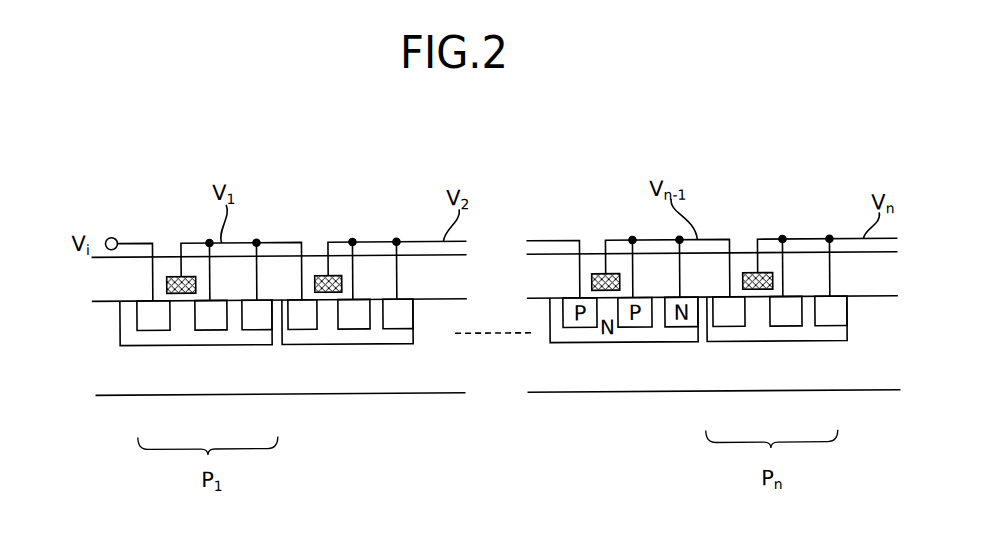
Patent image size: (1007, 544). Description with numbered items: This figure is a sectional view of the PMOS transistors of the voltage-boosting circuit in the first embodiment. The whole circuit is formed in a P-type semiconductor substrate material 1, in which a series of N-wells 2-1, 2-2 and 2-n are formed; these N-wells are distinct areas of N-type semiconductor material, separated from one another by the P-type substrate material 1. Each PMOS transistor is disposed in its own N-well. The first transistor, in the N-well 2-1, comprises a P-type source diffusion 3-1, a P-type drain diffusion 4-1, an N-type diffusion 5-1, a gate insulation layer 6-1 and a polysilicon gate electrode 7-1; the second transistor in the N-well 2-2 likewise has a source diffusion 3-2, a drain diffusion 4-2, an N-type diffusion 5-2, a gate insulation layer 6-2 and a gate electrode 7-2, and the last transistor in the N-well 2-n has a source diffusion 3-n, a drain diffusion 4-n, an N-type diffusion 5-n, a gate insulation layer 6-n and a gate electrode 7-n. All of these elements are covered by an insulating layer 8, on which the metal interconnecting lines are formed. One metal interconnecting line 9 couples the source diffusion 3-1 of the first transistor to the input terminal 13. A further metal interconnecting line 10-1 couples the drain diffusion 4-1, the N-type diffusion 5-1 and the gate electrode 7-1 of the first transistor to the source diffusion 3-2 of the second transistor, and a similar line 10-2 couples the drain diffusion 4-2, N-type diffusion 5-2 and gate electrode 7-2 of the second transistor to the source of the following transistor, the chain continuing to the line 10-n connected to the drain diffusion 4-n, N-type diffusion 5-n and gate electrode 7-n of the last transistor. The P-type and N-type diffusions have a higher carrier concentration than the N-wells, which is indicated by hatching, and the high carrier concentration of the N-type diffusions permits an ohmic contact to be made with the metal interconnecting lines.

The P-type semiconductor substrate material 1 is at (418, 352).
The N-well 2-1 is at (250, 344).
The N-well 2-2 is at (395, 344).
The N-well 2-n is at (833, 344).
The P-type source diffusion 3-1 is at (152, 330).
The P-type source diffusion 3-2 is at (310, 344).
The P-type source diffusion 3-n is at (735, 344).
The P-type drain diffusion 4-1 is at (210, 344).
The P-type drain diffusion 4-2 is at (357, 344).
The P-type drain diffusion 4-n is at (795, 344).
The N-type diffusion 5-1 is at (254, 296).
The N-type diffusion 5-2 is at (416, 316).
The N-type diffusion 5-n is at (850, 321).
The gate insulation layer 6-1 is at (199, 294).
The gate insulation layer 6-2 is at (345, 296).
The gate insulation layer 6-n is at (773, 296).
The polysilicon gate electrode 7-1 is at (176, 274).
The polysilicon gate electrode 7-2 is at (314, 274).
The polysilicon gate electrode 7-n is at (750, 274).
The insulating layer 8 is at (443, 278).
The metal interconnecting line 9 is at (133, 241).
The metal interconnecting line 10-1 is at (273, 241).
The metal interconnecting line 10-2 is at (372, 241).
The metal interconnecting line 10-n is at (848, 241).
The input terminal 13 is at (108, 235).